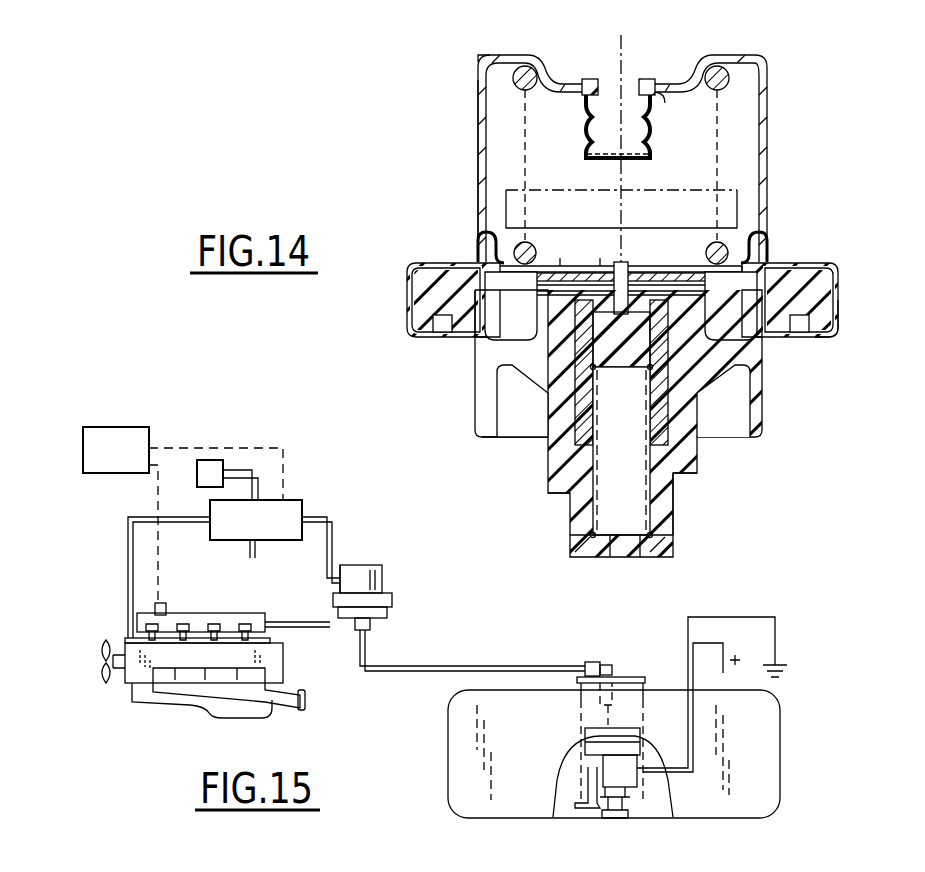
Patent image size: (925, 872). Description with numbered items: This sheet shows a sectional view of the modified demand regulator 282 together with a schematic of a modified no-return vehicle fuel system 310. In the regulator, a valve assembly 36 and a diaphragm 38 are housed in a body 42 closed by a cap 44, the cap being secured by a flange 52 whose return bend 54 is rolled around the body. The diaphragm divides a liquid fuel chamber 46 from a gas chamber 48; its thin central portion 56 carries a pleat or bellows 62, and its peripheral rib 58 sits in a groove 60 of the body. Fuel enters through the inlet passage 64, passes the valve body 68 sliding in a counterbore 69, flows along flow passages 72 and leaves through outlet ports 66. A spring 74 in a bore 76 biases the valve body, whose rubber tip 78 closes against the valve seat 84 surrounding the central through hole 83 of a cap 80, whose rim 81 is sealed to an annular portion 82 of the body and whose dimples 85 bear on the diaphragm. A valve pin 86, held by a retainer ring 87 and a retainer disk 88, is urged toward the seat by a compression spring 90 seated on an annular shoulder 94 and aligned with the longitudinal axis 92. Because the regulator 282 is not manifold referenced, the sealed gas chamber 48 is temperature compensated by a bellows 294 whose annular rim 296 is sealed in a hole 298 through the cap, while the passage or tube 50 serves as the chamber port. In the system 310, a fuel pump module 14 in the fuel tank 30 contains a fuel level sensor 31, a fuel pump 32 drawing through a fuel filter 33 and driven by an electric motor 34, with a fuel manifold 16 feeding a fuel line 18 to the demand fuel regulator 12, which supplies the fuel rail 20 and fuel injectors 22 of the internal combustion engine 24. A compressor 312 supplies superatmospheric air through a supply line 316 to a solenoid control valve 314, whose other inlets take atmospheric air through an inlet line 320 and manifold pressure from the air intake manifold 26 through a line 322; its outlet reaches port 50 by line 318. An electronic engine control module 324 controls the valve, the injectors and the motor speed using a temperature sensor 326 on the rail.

In FIG. 15, the demand fuel regulator 12 is at (383, 561).
In FIG. 15, the fuel pump module 14 is at (550, 773).
In FIG. 15, the fuel manifold 16 is at (630, 700).
In FIG. 15, the fuel line 18 is at (482, 666).
In FIG. 15, the fuel rail 20 is at (262, 613).
In FIG. 15, the fuel injectors 22 is at (210, 613).
In FIG. 15, the internal combustion engine 24 is at (190, 712).
In FIG. 15, the air intake manifold 26 is at (125, 645).
In FIG. 15, the fuel tank 30 is at (463, 815).
In FIG. 15, the fuel level sensor 31 is at (580, 800).
In FIG. 15, the fuel pump 32 is at (655, 786).
In FIG. 15, the fuel filter 33 is at (602, 815).
In FIG. 15, the electric motor 34 is at (585, 730).
In FIG. 14, the valve assembly 36 is at (535, 440).
In FIG. 14, the diaphragm 38 is at (762, 258).
In FIG. 14, the body 42 is at (480, 375).
In FIG. 14, the cap 44 is at (478, 89).
In FIG. 14, the liquid fuel chamber 46 is at (460, 337).
In FIG. 14, the gas chamber 48 is at (748, 118).
In FIG. 15, the passage or tube 50 is at (342, 565).
In FIG. 14, the flange 52 is at (810, 268).
In FIG. 14, the return bend 54 is at (838, 335).
In FIG. 14, the central portion 56 is at (538, 247).
In FIG. 14, the peripheral rib 58 is at (445, 268).
In FIG. 14, the groove 60 is at (410, 290).
In FIG. 14, the pleat or bellows 62 is at (765, 195).
In FIG. 14, the inlet passage 64 is at (628, 548).
In FIG. 14, the outlet ports 66 is at (522, 367).
In FIG. 14, the valve body 68 is at (655, 452).
In FIG. 14, the counterbore 69 is at (560, 480).
In FIG. 14, the flow passages 72 is at (700, 452).
In FIG. 14, the spring 74 is at (665, 530).
In FIG. 14, the bore 76 is at (585, 426).
In FIG. 14, the rubber tip 78 is at (621, 357).
In FIG. 14, the cap 80 is at (530, 290).
In FIG. 14, the rim 81 is at (511, 306).
In FIG. 14, the annular portion 82 is at (731, 306).
In FIG. 14, the central through hole 83 is at (628, 262).
In FIG. 14, the valve seat 84 is at (592, 273).
In FIG. 14, the dimples 85 is at (738, 289).
In FIG. 14, the valve pin 86 is at (605, 268).
In FIG. 14, the retainer ring 87 is at (706, 247).
In FIG. 14, the retainer disk 88 is at (632, 266).
In FIG. 14, the compression spring 90 is at (525, 62).
In FIG. 14, the longitudinal axis 92 is at (641, 79).
In FIG. 14, the annular shoulder 94 is at (665, 97).
In FIG. 14, the modified demand regulator 282 is at (462, 60).
In FIG. 14, the bellows 294 is at (580, 130).
In FIG. 14, the annular rim 296 is at (590, 79).
In FIG. 14, the hole 298 is at (717, 127).
In FIG. 15, the modified no-return vehicle fuel system 310 is at (100, 566).
In FIG. 15, the compressor 312 is at (210, 460).
In FIG. 15, the solenoid control valve 314 is at (292, 497).
In FIG. 15, the supply line 316 is at (245, 462).
In FIG. 15, the line 318 is at (322, 520).
In FIG. 15, the inlet line 320 is at (250, 548).
In FIG. 15, the line 322 is at (125, 520).
In FIG. 15, the electronic engine control module 324 is at (138, 427).
In FIG. 15, the temperature sensor 326 is at (155, 603).